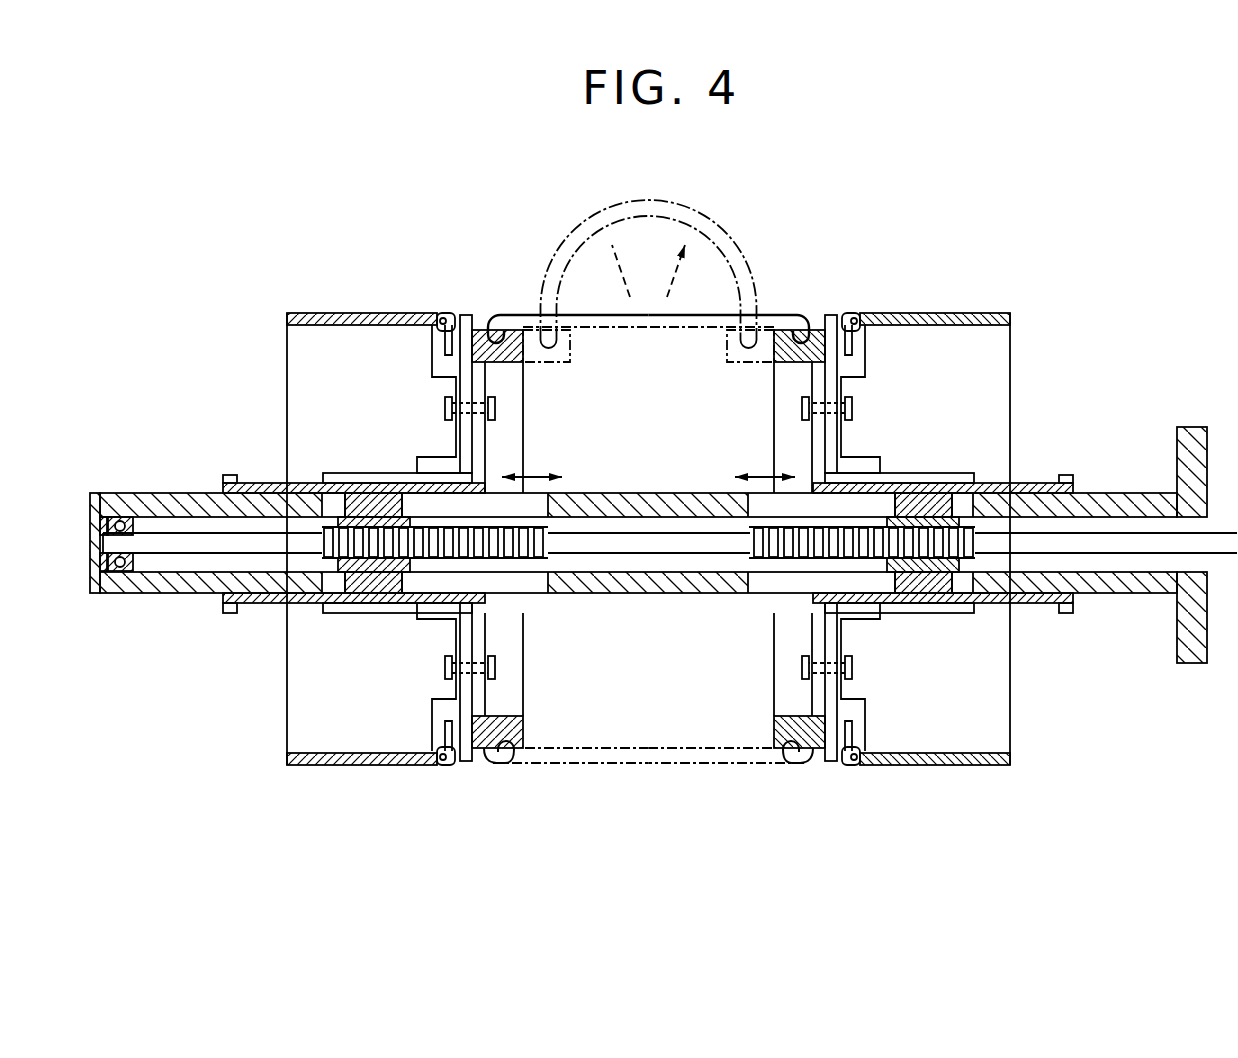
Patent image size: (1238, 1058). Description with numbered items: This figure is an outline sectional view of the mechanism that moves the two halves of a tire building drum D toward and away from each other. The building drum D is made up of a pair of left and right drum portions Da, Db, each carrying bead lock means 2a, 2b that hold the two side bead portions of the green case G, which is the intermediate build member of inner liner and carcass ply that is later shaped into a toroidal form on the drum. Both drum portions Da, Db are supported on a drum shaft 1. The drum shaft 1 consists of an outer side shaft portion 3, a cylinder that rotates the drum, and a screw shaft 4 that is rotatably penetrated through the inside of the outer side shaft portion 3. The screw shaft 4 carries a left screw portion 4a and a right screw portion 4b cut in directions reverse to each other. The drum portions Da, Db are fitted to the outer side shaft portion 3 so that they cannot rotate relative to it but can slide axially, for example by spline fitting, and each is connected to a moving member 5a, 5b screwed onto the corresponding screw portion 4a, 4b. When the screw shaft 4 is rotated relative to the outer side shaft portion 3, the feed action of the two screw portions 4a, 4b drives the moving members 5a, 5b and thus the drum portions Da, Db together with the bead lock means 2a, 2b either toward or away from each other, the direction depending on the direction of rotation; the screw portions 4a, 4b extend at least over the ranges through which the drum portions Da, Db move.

The drum shaft 1 is at (1178, 318).
The outer side shaft portion 3 is at (1150, 502).
The screw shaft 4 is at (1095, 540).
The bead lock means 2a is at (525, 728).
The bead lock means 2b is at (778, 727).
The left screw portion 4a is at (445, 560).
The right screw portion 4b is at (855, 560).
The moving member 5a is at (365, 585).
The moving member 5b is at (932, 585).
The building drum D is at (840, 282).
The left drum portion Da is at (368, 313).
The right drum portion Db is at (975, 308).
The green case G is at (688, 312).